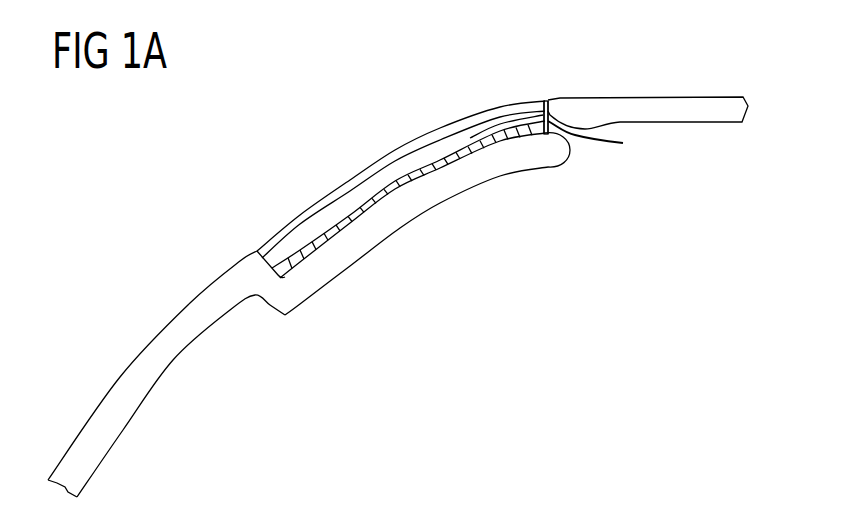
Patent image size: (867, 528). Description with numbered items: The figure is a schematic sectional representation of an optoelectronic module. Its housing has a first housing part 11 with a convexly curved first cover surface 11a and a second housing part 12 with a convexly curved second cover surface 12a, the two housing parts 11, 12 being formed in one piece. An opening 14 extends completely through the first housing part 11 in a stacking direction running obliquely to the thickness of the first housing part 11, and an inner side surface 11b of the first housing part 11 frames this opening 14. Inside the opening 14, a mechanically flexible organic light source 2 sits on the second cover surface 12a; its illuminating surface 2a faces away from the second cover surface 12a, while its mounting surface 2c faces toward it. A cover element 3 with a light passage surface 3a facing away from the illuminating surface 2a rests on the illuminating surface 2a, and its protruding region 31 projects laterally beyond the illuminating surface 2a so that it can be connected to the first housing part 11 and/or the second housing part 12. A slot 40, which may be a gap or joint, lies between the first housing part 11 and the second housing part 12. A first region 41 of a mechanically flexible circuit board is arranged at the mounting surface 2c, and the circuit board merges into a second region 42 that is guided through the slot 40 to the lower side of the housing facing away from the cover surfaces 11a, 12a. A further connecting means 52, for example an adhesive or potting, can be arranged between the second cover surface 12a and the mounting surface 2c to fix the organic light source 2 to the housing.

The organic light source 2 is at (403, 181).
The illuminating surface 2a is at (420, 148).
The mounting surface 2c is at (401, 190).
The cover element 3 is at (387, 162).
The light passage surface 3a is at (536, 103).
The first housing part 11 is at (398, 297).
The first cover surface 11a is at (120, 377).
The inner side surface 11b is at (537, 103).
The second housing part 12 is at (425, 224).
The second cover surface 12a is at (337, 230).
The opening 14 is at (387, 164).
The protruding region 31 is at (257, 258).
The slot 40 is at (577, 144).
The first region of circuit board 41 is at (419, 197).
The second region of circuit board 42 is at (623, 143).
The further connecting means 52 is at (442, 170).